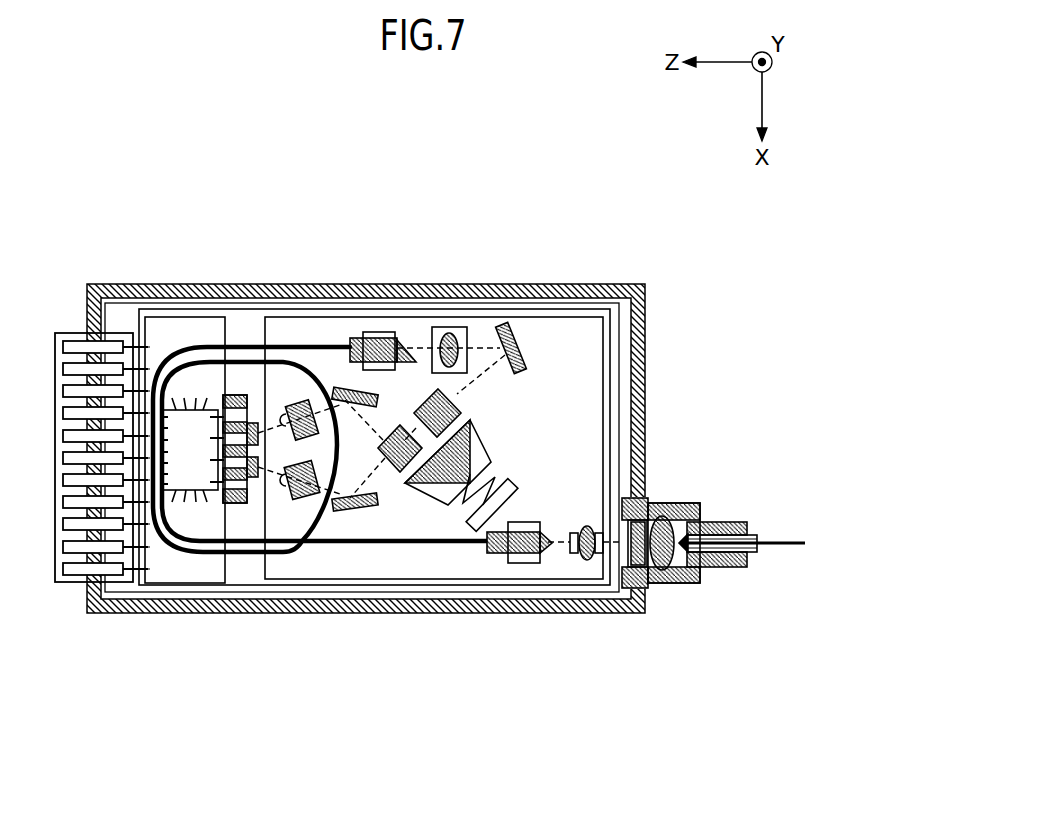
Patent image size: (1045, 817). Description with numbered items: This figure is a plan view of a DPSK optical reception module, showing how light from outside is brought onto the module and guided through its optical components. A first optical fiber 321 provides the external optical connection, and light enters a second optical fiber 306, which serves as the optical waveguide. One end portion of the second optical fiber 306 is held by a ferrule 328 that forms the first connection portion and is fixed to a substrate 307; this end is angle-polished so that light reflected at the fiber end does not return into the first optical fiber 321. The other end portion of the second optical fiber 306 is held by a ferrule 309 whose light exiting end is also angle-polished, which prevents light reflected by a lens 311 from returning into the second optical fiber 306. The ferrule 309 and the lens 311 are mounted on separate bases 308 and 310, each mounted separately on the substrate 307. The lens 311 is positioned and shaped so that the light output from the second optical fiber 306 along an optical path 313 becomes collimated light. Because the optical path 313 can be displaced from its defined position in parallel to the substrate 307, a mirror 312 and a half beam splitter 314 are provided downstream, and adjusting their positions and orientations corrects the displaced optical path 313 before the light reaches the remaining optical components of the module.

The second optical fiber 306 is at (247, 344).
The substrate 307 is at (303, 330).
The base 308 is at (373, 331).
The ferrule 309 is at (384, 332).
The base 310 is at (441, 327).
The lens 311 is at (455, 327).
The mirror 312 is at (512, 324).
The optical path 313 is at (475, 378).
The half beam splitter 314 is at (462, 412).
The first optical fiber 321 is at (787, 542).
The ferrule 328 is at (502, 556).